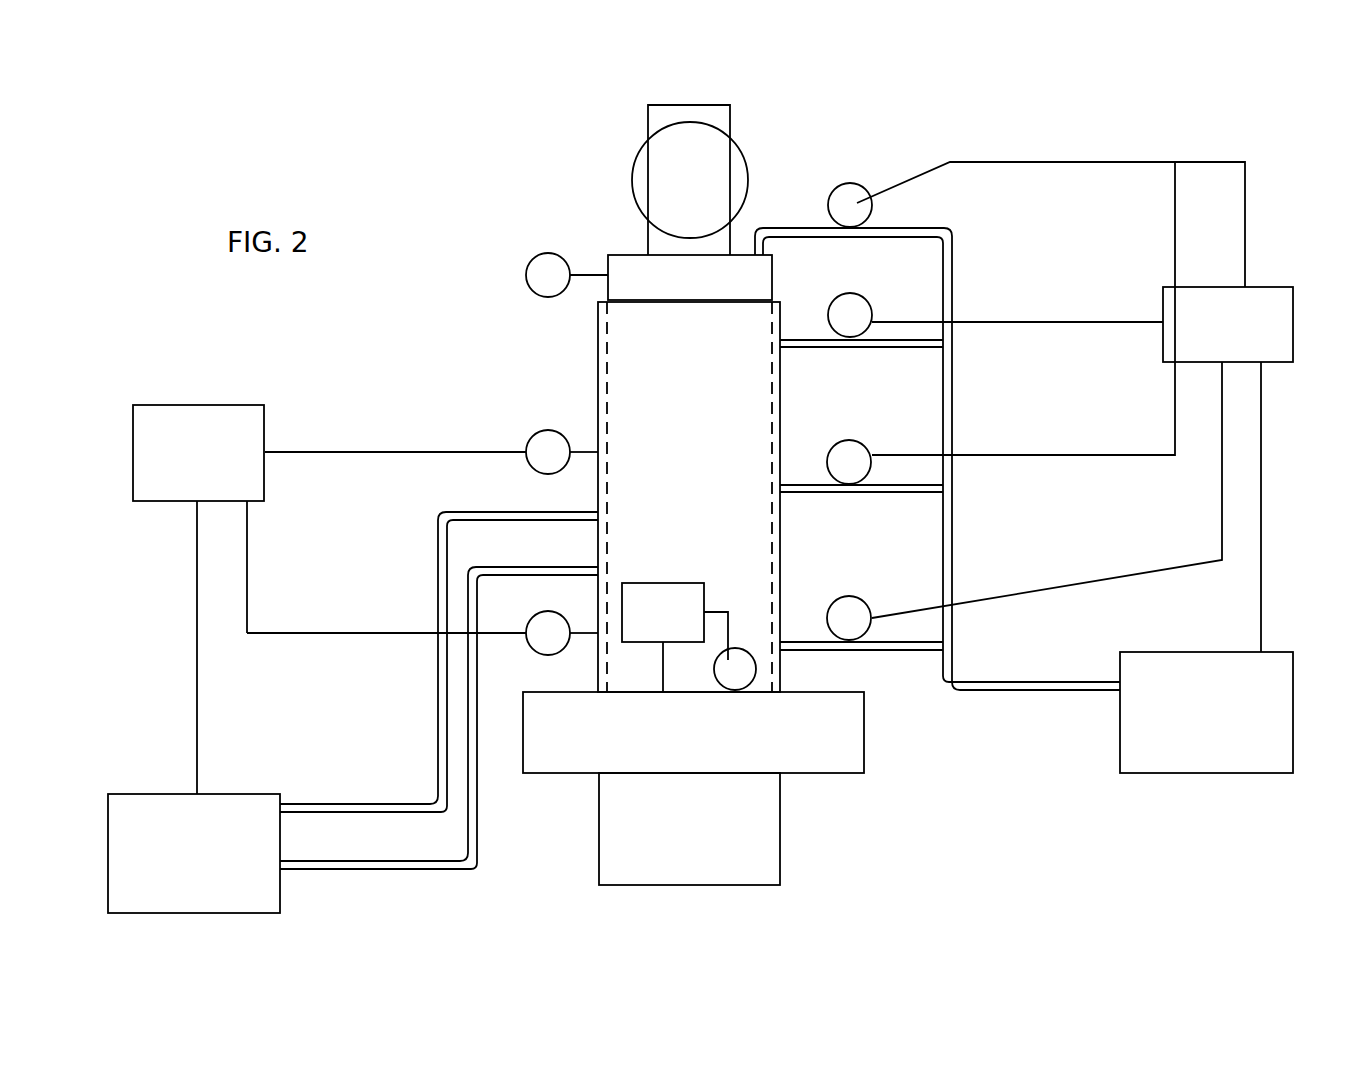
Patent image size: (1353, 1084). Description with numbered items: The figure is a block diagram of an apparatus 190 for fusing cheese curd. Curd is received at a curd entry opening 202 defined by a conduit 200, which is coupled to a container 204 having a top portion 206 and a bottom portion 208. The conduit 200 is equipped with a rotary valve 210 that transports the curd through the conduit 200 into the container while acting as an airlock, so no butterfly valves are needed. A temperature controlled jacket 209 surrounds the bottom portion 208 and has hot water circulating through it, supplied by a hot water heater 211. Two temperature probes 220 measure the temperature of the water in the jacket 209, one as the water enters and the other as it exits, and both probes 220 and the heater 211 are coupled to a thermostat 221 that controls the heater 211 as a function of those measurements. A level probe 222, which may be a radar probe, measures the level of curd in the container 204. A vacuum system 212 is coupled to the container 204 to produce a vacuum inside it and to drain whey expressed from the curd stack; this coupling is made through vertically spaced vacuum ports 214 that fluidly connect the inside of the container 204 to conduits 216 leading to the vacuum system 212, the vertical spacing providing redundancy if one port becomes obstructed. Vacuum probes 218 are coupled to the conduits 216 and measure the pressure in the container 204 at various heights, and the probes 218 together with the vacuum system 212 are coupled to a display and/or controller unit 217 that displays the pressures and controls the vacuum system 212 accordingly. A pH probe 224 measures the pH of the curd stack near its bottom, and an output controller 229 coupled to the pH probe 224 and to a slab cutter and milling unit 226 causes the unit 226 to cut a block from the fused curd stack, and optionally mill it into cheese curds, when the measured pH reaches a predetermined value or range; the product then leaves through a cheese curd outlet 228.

The apparatus 190 is at (330, 140).
The conduit 200 is at (730, 238).
The curd entry opening 202 is at (695, 97).
The container 204 is at (605, 285).
The top portion 206 is at (604, 257).
The bottom portion 208 is at (689, 497).
The temperature controlled jacket 209 is at (596, 548).
The rotary valve 210 is at (633, 148).
The hot water heater 211 is at (138, 792).
The vacuum system 212 is at (1150, 650).
The vacuum ports 214 is at (757, 257).
The conduits 216 is at (905, 227).
The display and/or controller unit 217 is at (1228, 469).
The vacuum probes 218 is at (868, 193).
The temperature probes 220 is at (524, 440).
The thermostat 221 is at (198, 599).
The level probe 222 is at (528, 295).
The pH probe 224 is at (760, 682).
The slab cutter and milling unit 226 is at (520, 727).
The cheese curd outlet 228 is at (690, 887).
The output controller 229 is at (675, 637).